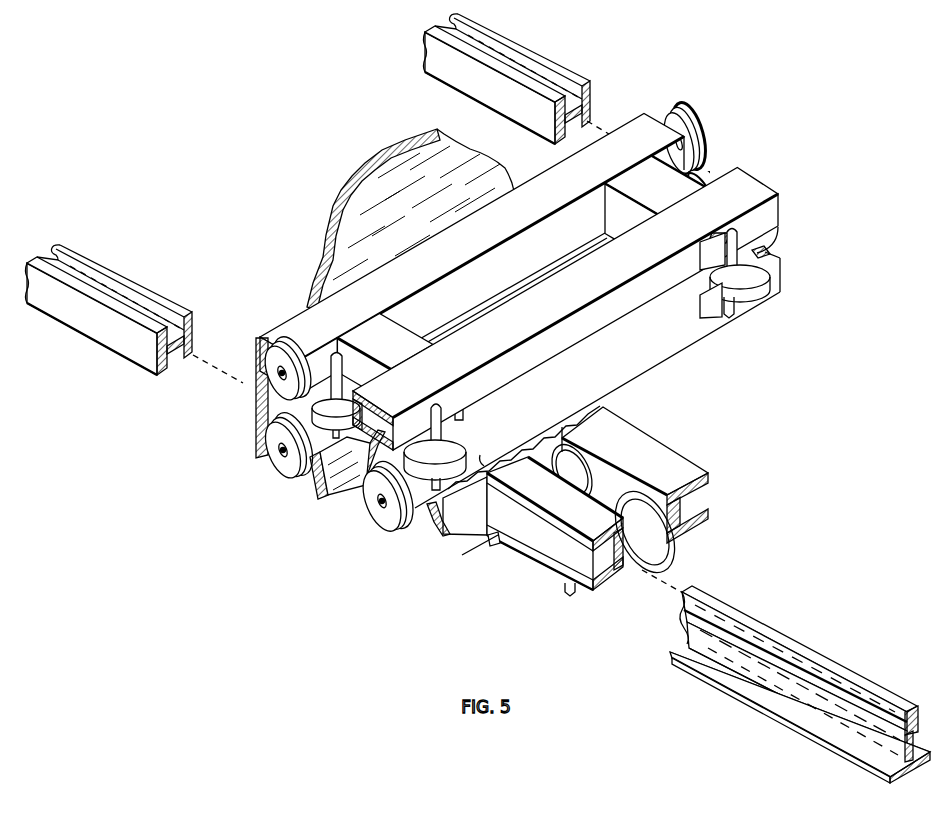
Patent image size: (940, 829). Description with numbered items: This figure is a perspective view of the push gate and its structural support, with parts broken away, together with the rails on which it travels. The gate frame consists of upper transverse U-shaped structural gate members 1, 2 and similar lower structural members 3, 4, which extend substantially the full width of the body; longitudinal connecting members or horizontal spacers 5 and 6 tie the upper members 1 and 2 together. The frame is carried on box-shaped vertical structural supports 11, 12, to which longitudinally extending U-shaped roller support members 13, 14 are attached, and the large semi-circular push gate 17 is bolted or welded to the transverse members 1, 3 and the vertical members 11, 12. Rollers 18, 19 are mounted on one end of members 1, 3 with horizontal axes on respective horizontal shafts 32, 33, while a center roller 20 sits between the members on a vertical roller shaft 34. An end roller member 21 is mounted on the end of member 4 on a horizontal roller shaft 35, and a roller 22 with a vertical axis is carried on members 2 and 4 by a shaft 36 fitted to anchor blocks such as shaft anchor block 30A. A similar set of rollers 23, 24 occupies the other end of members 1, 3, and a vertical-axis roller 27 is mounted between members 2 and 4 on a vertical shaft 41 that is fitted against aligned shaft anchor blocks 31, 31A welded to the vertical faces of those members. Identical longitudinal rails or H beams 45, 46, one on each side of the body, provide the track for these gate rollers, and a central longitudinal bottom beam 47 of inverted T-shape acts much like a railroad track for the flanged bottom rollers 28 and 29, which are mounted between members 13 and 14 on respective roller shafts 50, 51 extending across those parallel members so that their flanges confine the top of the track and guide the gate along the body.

The upper transverse U-shaped structural gate member 1 is at (634, 125).
The upper transverse U-shaped structural gate member 2 is at (753, 180).
The lower structural member 3 is at (258, 421).
The lower structural member 4 is at (781, 285).
The longitudinal connecting member 5 is at (367, 340).
The longitudinal connecting member 6 is at (623, 182).
The vertical structural support 11 is at (462, 513).
The vertical structural support 12 is at (604, 407).
The roller support member 13 is at (538, 533).
The roller support member 14 is at (643, 447).
The push gate 17 is at (343, 247).
The roller 18 is at (275, 363).
The roller 19 is at (268, 453).
The center roller 20 is at (362, 393).
The end roller member 21 is at (380, 517).
The roller 22 is at (463, 447).
The roller 23 is at (697, 123).
The roller 24 is at (700, 172).
The roller 27 is at (758, 260).
The bottom roller 28 is at (576, 475).
The bottom roller 29 is at (652, 540).
The shaft anchor block 30A is at (490, 454).
The shaft anchor block 31 is at (712, 247).
The shaft anchor block 31A is at (717, 306).
The horizontal shaft 32 is at (279, 376).
The horizontal shaft 33 is at (280, 448).
The vertical roller shaft 34 is at (342, 375).
The horizontal roller shaft 35 is at (374, 503).
The shaft 36 is at (438, 402).
The vertical shaft 41 is at (738, 232).
The longitudinal rail or H beam 45 is at (86, 335).
The longitudinal rail or H beam 46 is at (490, 104).
The bottom beam 47 is at (752, 689).
The roller shaft 50 is at (490, 545).
The roller shaft 51 is at (568, 592).